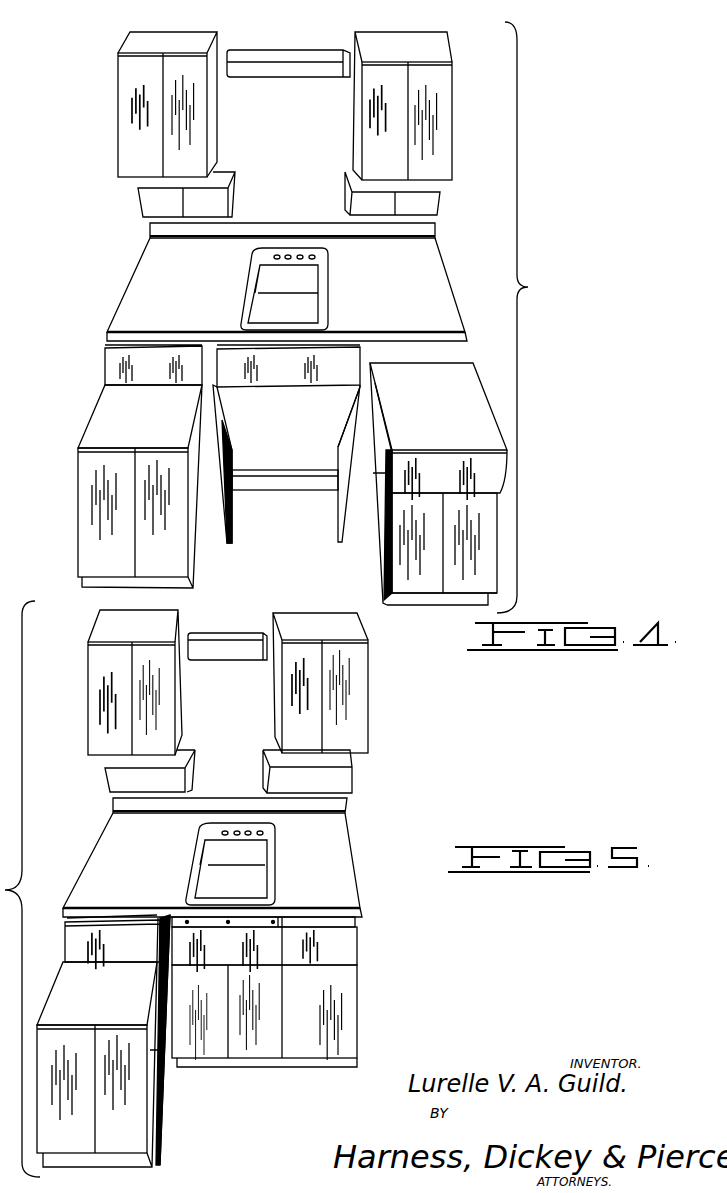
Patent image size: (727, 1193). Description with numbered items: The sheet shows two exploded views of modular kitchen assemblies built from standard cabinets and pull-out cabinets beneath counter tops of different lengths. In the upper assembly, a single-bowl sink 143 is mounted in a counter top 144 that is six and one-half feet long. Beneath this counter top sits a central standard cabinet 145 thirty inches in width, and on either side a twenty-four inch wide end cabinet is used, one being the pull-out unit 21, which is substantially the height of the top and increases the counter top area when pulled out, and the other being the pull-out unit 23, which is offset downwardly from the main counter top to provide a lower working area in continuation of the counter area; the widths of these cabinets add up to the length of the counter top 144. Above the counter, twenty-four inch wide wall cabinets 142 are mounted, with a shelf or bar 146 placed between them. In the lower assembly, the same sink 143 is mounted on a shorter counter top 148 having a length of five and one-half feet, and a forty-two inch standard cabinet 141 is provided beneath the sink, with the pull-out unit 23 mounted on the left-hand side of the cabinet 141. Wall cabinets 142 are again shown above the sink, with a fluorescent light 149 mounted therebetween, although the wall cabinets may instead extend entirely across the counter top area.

In FIG. 4, the wall cabinet 142 is at (200, 40).
In FIG. 5, the wall cabinet 142 is at (107, 615).
In FIG. 4, the wall shelf bar 146 is at (260, 72).
In FIG. 4, the counter top 144 is at (430, 257).
In FIG. 4, the sink 143 is at (328, 283).
In FIG. 5, the sink 143 is at (275, 850).
In FIG. 4, the central standard cabinet 145 is at (280, 485).
In FIG. 4, the pull-out unit 21 is at (475, 402).
In FIG. 4, the pull-out unit 23 is at (98, 418).
In FIG. 5, the pull-out unit 23 is at (133, 1110).
In FIG. 5, the fluorescent light 149 is at (243, 606).
In FIG. 5, the counter top 148 is at (347, 872).
In FIG. 5, the standard cabinet 141 is at (340, 997).